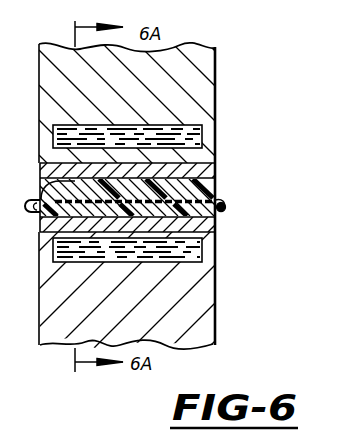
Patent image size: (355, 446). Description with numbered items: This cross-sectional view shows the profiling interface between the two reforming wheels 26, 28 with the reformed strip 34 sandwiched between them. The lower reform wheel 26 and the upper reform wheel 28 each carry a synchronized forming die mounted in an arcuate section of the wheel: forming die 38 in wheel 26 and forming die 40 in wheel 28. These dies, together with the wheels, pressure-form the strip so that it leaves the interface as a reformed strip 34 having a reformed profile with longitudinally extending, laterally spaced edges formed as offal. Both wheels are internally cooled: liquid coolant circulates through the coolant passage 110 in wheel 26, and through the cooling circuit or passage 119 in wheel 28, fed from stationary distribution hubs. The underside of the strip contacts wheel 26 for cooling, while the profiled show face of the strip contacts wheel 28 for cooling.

The reforming wheel 28 is at (198, 82).
The coolant passage 119 is at (200, 133).
The forming die 40 is at (215, 175).
The reformed strip 34 is at (220, 208).
The forming die 38 is at (218, 225).
The coolant passage 110 is at (213, 253).
The reforming wheel 26 is at (213, 312).